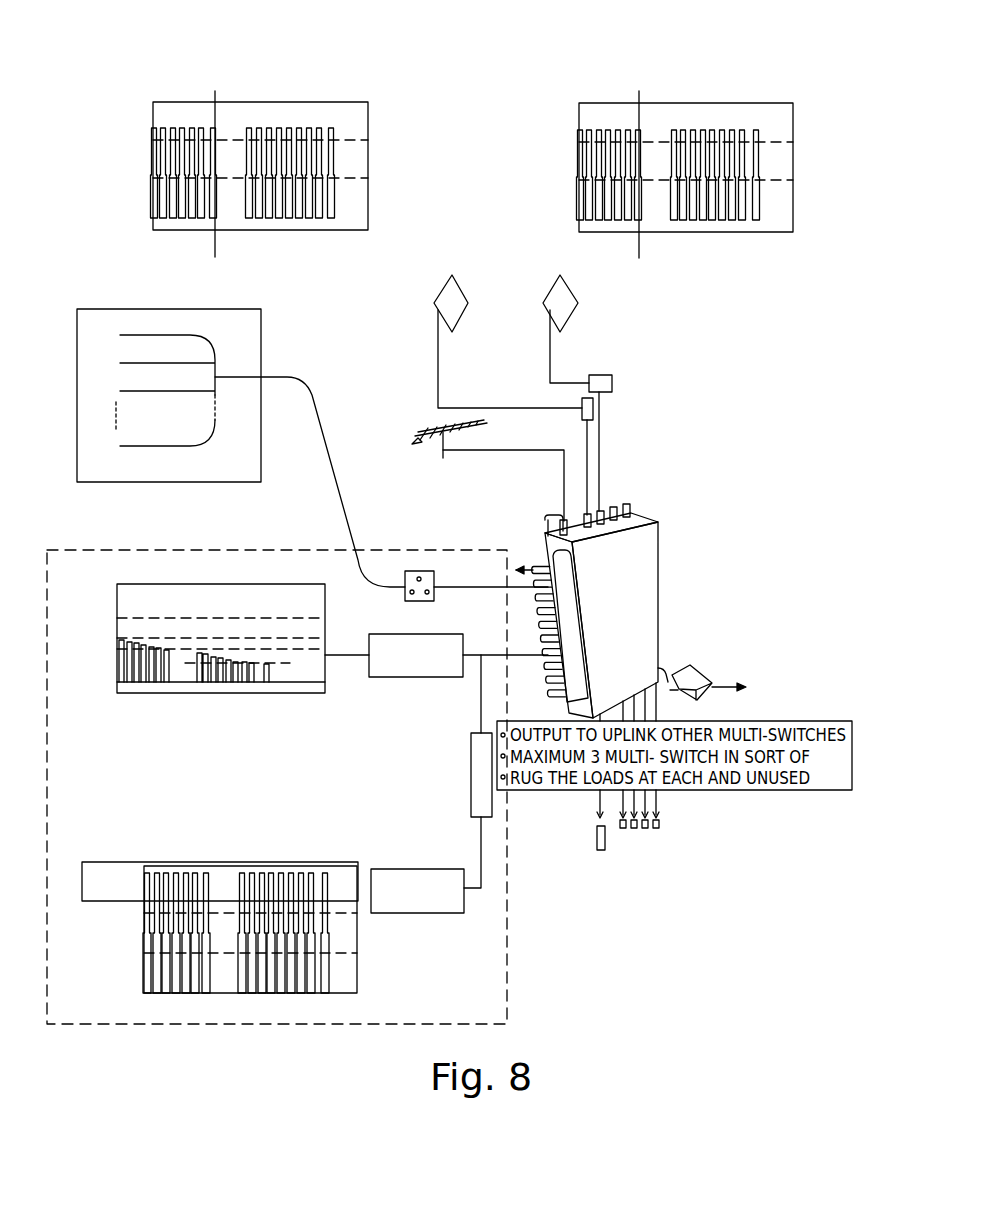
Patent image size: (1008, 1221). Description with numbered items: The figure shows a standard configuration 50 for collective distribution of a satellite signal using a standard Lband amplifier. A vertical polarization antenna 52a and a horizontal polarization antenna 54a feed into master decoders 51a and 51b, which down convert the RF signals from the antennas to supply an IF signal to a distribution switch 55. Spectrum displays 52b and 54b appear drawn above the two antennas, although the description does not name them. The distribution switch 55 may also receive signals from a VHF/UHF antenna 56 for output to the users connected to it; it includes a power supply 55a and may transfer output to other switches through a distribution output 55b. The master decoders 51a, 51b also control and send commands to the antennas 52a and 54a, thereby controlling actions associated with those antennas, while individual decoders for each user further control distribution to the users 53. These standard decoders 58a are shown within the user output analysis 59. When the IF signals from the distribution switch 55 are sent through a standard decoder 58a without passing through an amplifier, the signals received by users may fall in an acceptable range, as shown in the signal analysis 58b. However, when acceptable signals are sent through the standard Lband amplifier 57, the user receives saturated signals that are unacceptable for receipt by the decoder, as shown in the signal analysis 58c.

The standard configuration 50 is at (471, 75).
The master decoder 51a is at (600, 375).
The master decoder 51b is at (582, 406).
The vertical polarization antenna 52a is at (452, 275).
The spectrum of first LNB output (-25 dBm) 52b is at (172, 101).
The users 53 is at (256, 309).
The horizontal polarization antenna 54a is at (549, 290).
The spectrum of second LNB output (-25 dBm) 54b is at (702, 102).
The distribution switch 55 is at (645, 567).
The power supply 55a is at (700, 668).
The distribution output 55b is at (657, 814).
The VHF/UHF antenna 56 is at (432, 425).
The standard Lband amplifier 57 is at (471, 808).
The standard decoder 58a is at (410, 677).
The signal analysis 58b is at (325, 590).
The signal analysis 58c is at (155, 866).
The user output analysis 59 is at (507, 977).